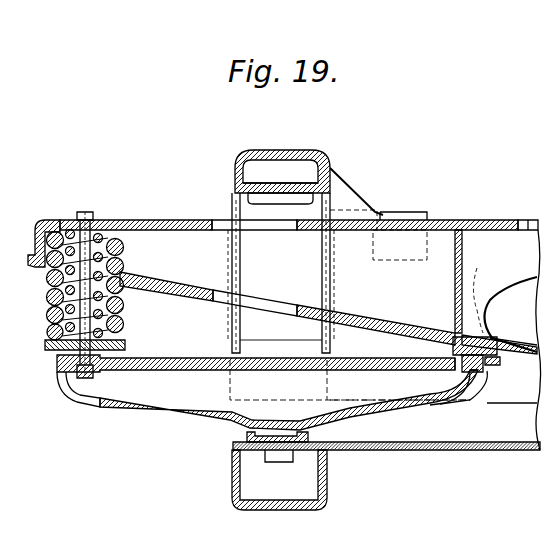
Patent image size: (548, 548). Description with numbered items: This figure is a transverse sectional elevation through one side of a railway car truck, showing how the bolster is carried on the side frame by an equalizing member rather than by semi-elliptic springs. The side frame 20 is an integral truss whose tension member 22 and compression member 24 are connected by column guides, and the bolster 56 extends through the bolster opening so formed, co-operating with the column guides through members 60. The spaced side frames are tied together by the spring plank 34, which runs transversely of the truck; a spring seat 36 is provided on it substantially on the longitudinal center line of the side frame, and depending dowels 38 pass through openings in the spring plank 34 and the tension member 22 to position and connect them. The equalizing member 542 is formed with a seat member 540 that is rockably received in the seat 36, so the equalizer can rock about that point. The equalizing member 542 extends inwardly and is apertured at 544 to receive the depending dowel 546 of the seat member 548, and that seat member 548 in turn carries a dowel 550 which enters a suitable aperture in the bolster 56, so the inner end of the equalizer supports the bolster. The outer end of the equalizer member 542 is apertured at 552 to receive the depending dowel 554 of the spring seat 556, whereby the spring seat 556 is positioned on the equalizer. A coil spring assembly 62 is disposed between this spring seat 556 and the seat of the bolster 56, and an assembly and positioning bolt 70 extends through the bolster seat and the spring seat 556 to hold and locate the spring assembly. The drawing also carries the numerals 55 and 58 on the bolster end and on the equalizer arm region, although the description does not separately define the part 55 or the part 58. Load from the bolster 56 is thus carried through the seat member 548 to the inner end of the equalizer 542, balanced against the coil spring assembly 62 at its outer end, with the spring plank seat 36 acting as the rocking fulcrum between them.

The side frame 20 is at (312, 153).
The tension member 22 is at (327, 482).
The compression member 24 is at (330, 173).
The spring plank 34 is at (442, 435).
The spring seat 36 is at (248, 438).
The dowels 38 is at (273, 462).
The bracket 55 is at (62, 219).
The bolster 56 is at (153, 242).
The sloped plate 58 is at (328, 313).
The members 60 is at (233, 250).
The coil spring assembly 62 is at (47, 298).
The assembly and positioning bolt 70 is at (92, 218).
The seat member 540 is at (282, 420).
The equalizing member 542 is at (100, 406).
The aperture 544 is at (501, 367).
The depending dowel 546 is at (485, 380).
The seat member 548 is at (493, 333).
The dowel 550 is at (477, 300).
The aperture 552 is at (57, 361).
The depending dowel 554 is at (67, 375).
The spring seat 556 is at (43, 340).